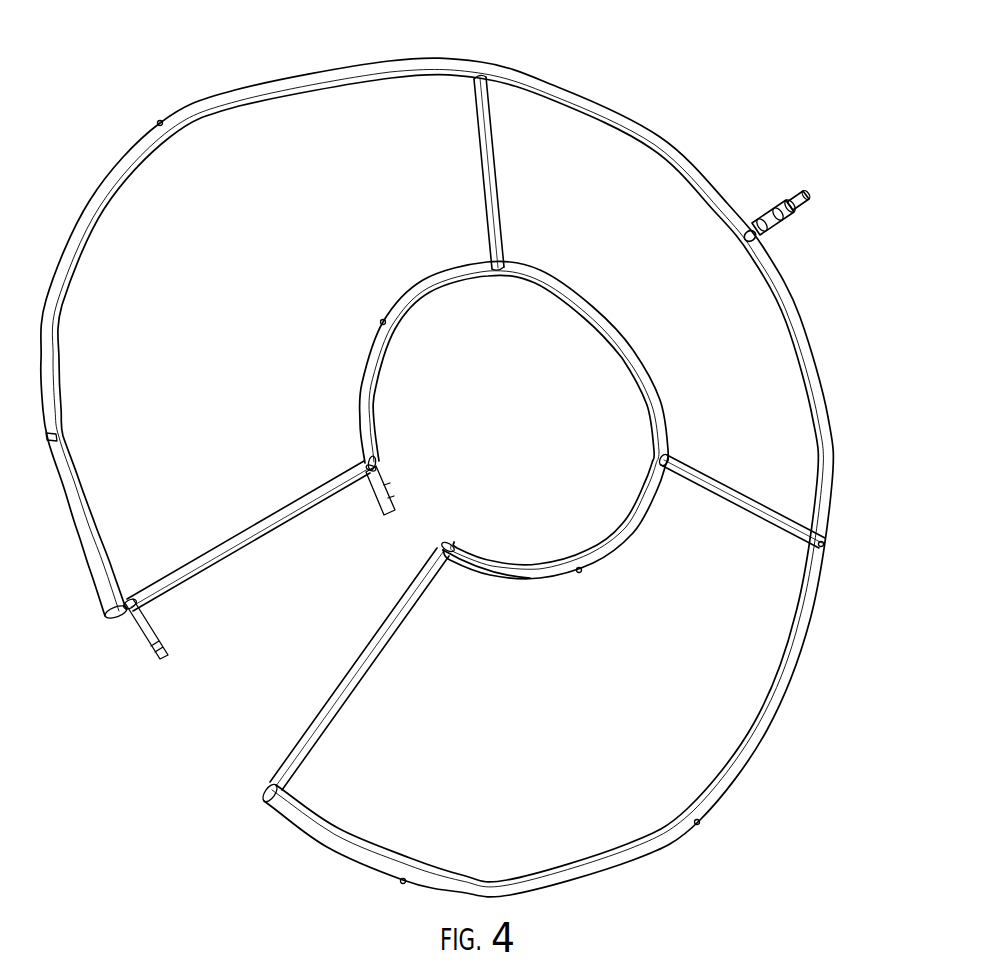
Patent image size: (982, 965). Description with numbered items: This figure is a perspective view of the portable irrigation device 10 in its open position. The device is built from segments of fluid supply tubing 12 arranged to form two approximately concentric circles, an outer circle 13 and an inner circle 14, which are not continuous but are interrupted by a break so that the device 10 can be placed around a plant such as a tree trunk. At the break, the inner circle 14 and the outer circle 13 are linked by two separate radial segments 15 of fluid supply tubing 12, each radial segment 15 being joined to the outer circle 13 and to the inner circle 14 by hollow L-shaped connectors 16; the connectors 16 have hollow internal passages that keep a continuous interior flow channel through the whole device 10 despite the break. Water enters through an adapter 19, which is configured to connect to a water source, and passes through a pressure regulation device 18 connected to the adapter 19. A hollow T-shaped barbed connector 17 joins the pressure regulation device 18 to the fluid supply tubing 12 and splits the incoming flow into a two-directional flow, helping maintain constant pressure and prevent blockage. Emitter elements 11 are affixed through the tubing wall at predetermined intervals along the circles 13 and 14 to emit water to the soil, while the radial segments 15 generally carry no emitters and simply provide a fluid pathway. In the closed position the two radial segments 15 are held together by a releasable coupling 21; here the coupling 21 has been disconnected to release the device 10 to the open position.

The portable irrigation device 10 is at (100, 137).
The emitter element 11 is at (50, 436).
The fluid supply tubing 12 is at (478, 570).
The outer circle 13 is at (385, 59).
The inner circle 14 is at (426, 277).
The radial segment 15 is at (229, 527).
The connector 16 is at (822, 545).
The T-shaped barbed connector 17 is at (746, 240).
The pressure regulation device 18 is at (786, 224).
The adapter 19 is at (795, 198).
The coupling 21 is at (393, 488).